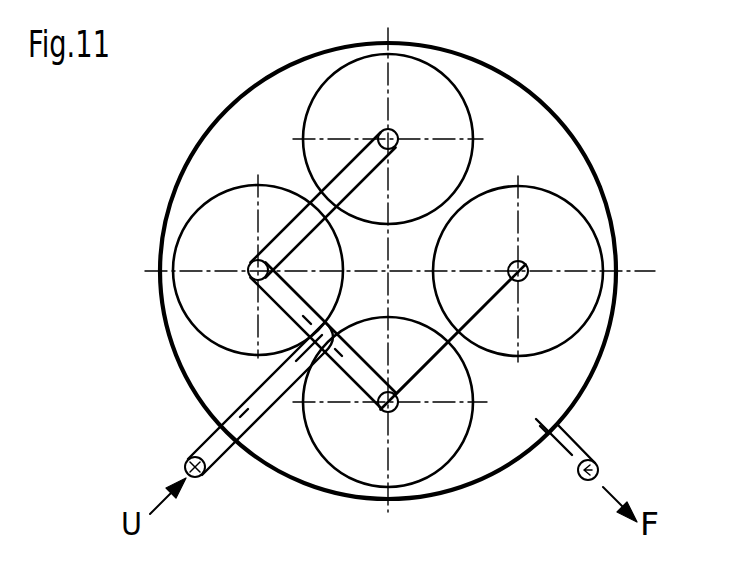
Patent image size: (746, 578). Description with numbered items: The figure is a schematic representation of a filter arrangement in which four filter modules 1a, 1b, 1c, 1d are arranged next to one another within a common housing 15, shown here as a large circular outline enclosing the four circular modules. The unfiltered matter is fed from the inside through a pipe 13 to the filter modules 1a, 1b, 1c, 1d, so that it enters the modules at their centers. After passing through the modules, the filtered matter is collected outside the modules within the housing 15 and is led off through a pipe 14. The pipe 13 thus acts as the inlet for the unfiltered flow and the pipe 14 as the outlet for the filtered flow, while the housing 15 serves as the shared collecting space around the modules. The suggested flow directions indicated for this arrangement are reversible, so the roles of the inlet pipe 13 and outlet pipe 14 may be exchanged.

The filter module 1a is at (258, 266).
The filter module 1b is at (388, 139).
The filter module 1c is at (390, 402).
The filter module 1d is at (518, 269).
The pipe 13 is at (203, 444).
The pipe 14 is at (580, 447).
The housing 15 is at (607, 340).